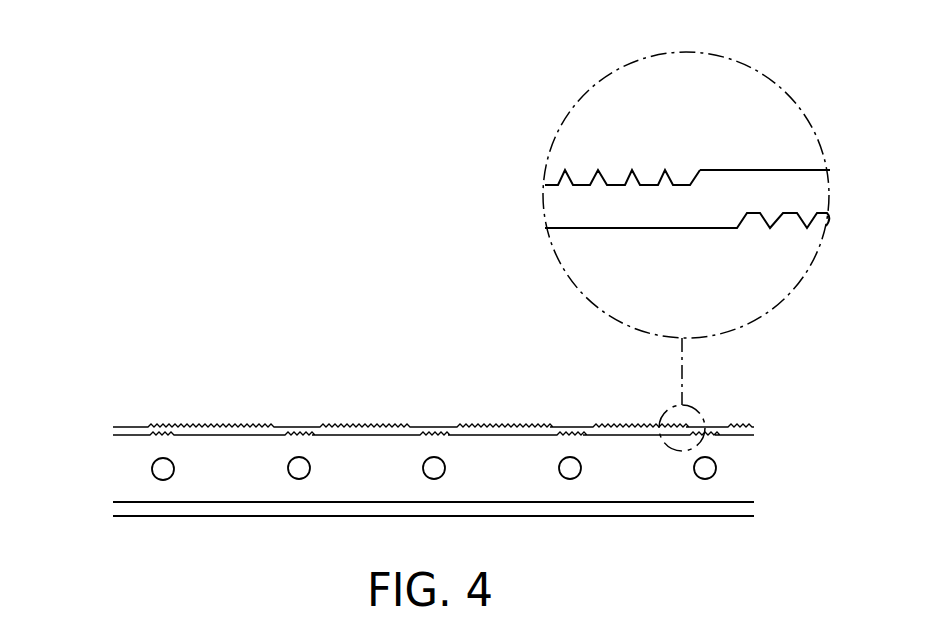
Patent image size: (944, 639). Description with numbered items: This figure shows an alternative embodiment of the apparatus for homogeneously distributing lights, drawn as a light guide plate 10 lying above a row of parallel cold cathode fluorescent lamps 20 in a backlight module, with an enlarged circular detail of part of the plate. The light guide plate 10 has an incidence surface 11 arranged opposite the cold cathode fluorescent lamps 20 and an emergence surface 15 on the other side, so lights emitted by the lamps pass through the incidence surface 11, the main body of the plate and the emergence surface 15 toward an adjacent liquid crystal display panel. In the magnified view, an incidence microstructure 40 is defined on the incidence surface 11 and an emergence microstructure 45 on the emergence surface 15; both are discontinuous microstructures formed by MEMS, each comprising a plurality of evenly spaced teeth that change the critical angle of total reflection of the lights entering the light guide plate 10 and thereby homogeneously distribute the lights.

The light guide plate 10 is at (807, 192).
The incidence surface 11 is at (128, 437).
The emergence surface 15 is at (127, 427).
The cold cathode fluorescent lamps 20 is at (717, 469).
The incidence microstructure 40 is at (810, 222).
The emergence microstructure 45 is at (670, 173).